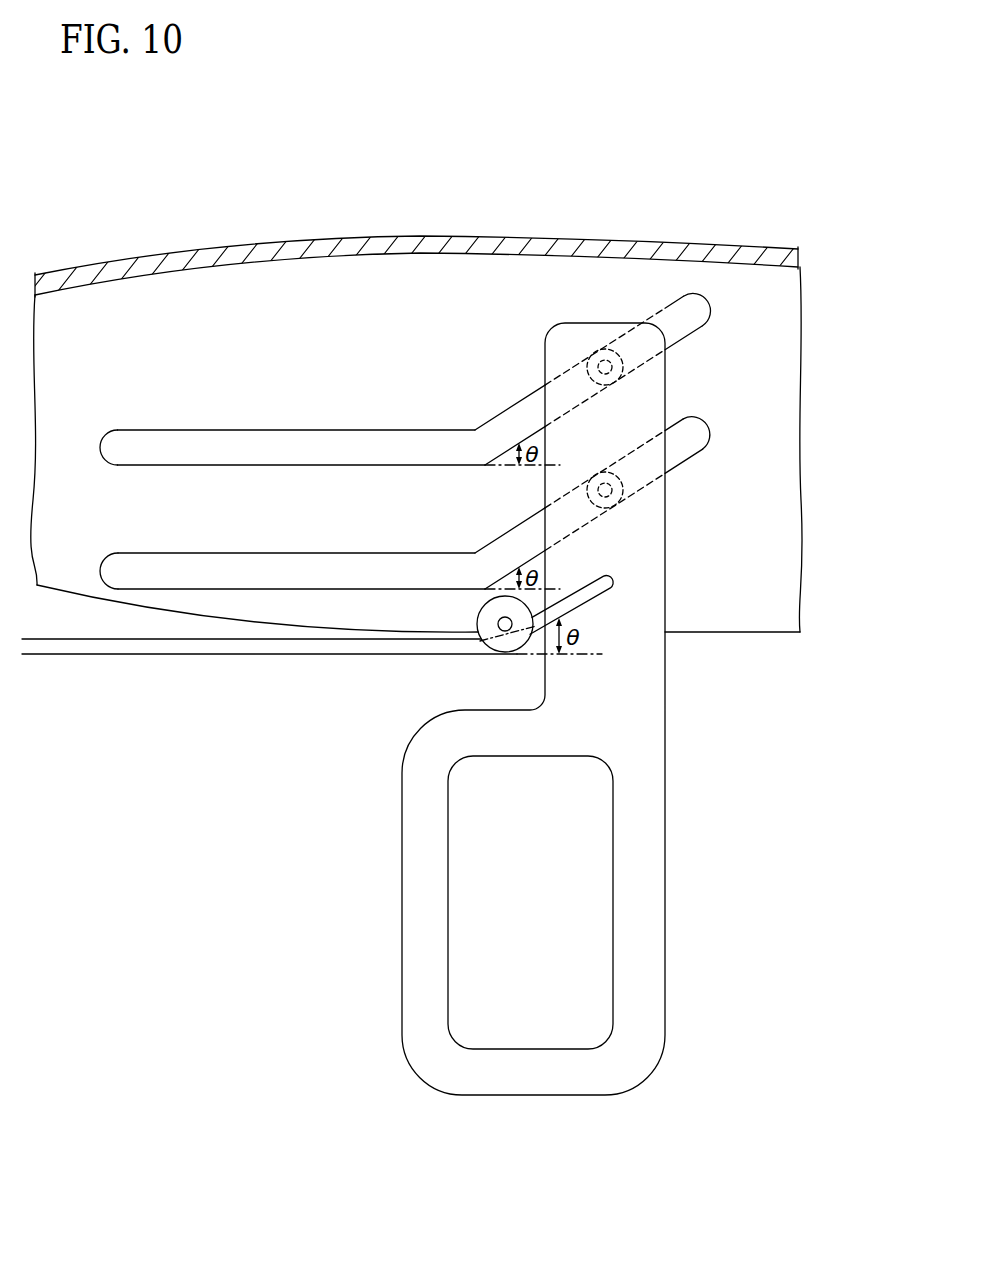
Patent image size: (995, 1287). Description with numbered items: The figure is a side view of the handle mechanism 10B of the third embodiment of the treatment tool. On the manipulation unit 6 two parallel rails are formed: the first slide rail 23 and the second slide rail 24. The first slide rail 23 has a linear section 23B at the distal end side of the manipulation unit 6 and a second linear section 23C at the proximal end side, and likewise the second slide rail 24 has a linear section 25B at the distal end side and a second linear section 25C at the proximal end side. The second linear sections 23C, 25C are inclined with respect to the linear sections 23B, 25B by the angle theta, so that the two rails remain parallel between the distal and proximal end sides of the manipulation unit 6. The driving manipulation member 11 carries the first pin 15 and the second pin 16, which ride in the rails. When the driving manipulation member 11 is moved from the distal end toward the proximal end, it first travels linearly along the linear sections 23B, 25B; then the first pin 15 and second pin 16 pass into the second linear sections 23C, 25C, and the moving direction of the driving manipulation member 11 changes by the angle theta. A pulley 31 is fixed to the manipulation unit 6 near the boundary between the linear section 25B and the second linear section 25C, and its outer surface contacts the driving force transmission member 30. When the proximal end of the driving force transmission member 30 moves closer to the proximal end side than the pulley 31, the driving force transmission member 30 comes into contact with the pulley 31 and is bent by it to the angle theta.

The handle mechanism 10B is at (737, 229).
The manipulation unit 6 is at (759, 248).
The first slide rail 23 is at (365, 429).
The linear section 23B is at (244, 430).
The second linear section 23C is at (679, 304).
The second slide rail 24 is at (378, 591).
The linear section 25B is at (294, 589).
The second linear section 25C is at (692, 450).
The first pin 15 is at (606, 360).
The second pin 16 is at (590, 480).
The driving manipulation member 11 is at (643, 718).
The pulley 31 is at (482, 621).
The driving force transmission member 30 is at (240, 648).